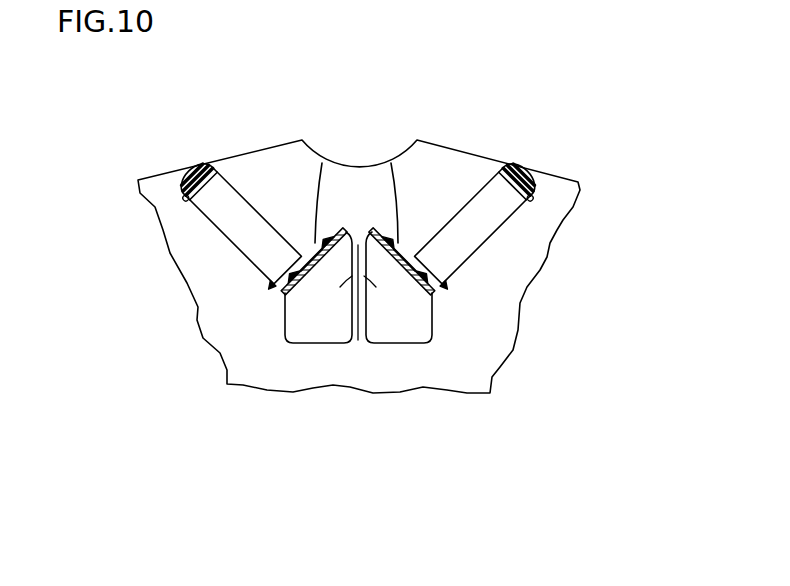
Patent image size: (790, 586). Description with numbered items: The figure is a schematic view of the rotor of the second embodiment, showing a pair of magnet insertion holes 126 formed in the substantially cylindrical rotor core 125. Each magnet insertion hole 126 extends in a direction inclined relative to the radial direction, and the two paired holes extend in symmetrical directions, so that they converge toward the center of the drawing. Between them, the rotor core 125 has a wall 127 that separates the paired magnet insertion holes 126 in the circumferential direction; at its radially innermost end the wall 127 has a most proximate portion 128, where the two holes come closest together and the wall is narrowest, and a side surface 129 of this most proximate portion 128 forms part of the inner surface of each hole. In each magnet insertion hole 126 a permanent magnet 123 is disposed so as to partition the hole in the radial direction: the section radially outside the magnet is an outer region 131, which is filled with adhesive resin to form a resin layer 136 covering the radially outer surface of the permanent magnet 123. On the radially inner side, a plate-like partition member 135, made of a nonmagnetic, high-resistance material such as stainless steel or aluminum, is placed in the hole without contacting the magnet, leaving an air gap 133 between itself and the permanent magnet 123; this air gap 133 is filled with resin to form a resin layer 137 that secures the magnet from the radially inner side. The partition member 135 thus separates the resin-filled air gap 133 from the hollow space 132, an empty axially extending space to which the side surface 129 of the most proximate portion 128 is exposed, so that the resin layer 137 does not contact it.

The permanent magnet 123 is at (262, 232).
The rotor core 125 is at (232, 344).
The magnet insertion hole 126 is at (358, 267).
The wall 127 is at (358, 200).
The most proximate portion 128 is at (358, 340).
The side surface 129 is at (340, 287).
The outer region 131 is at (566, 114).
The hollow space 132 is at (322, 320).
The air gap 133 is at (280, 287).
The partition member 135 is at (303, 295).
The resin layer 136 is at (203, 163).
The resin layer 137 is at (322, 163).